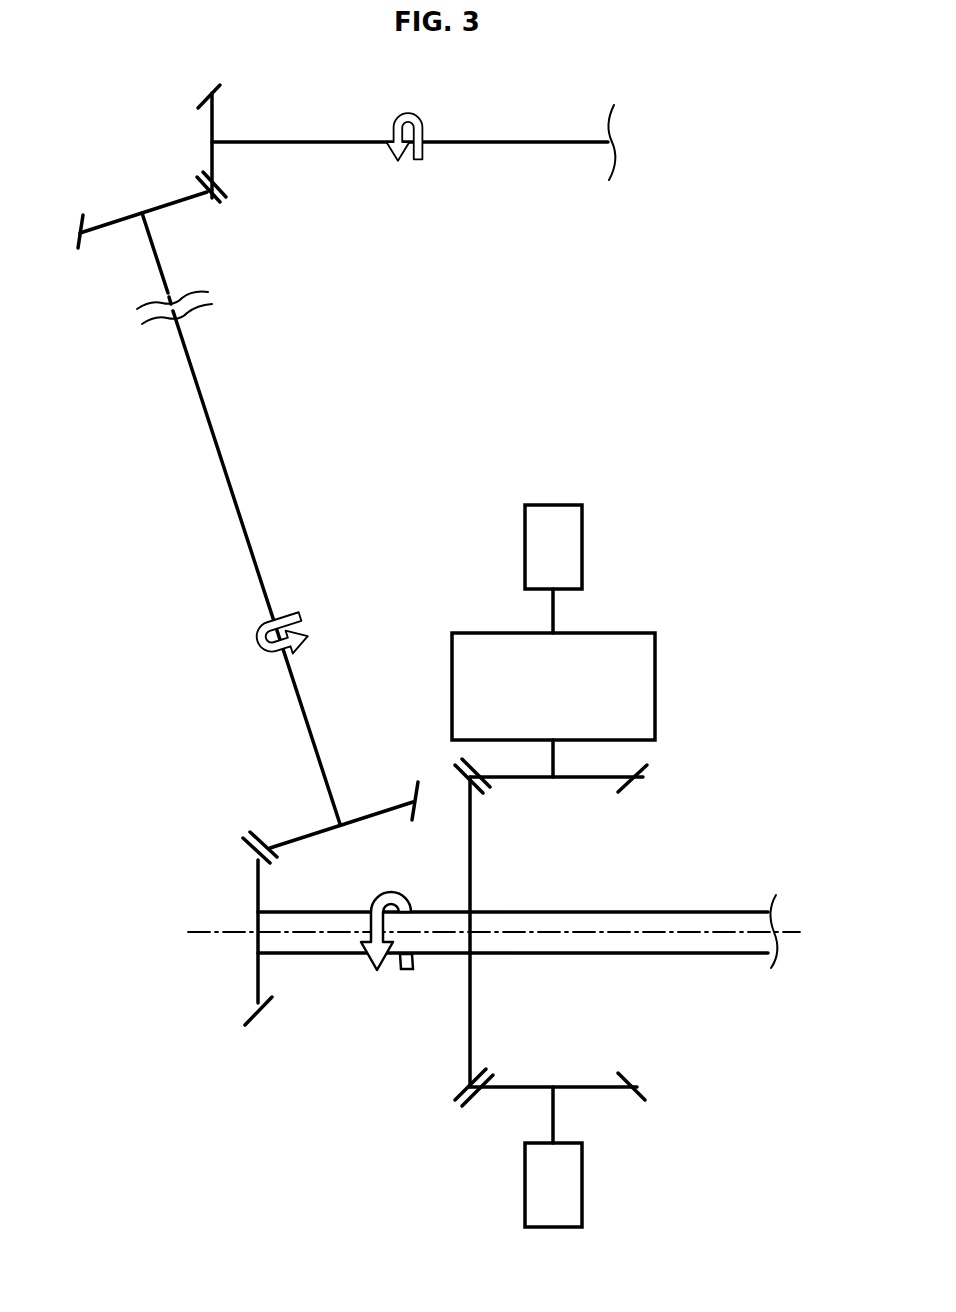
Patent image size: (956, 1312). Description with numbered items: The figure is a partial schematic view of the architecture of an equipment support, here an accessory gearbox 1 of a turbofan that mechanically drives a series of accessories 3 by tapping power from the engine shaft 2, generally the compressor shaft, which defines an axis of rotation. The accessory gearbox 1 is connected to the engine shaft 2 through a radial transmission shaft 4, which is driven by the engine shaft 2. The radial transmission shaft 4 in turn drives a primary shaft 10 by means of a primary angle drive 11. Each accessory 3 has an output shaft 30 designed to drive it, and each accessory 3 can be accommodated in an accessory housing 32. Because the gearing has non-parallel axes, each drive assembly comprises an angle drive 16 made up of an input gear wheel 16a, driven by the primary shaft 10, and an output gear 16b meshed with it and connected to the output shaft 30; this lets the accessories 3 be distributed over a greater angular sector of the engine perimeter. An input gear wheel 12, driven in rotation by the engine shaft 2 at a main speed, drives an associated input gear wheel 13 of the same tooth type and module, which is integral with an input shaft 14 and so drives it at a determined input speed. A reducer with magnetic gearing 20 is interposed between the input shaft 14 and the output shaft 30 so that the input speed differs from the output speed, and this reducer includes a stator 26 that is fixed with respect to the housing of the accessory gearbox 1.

The accessory gearbox 1 is at (752, 822).
The engine shaft 2 is at (323, 142).
The accessory 3 is at (546, 561).
The radial transmission shaft 4 is at (308, 720).
The primary shaft 10 is at (713, 955).
The primary angle drive 11 is at (230, 820).
The input gear wheel 12 is at (470, 1013).
The input gear wheel 13 is at (641, 775).
The input shaft 14 is at (553, 760).
The angle drive 16 is at (447, 753).
The input gear wheel 16a is at (455, 1085).
The output gear 16b is at (645, 1090).
The reducer with magnetic gearing 20 is at (541, 699).
The stator 26 is at (660, 687).
The output shaft 30 is at (553, 618).
The accessory housing 32 is at (588, 547).